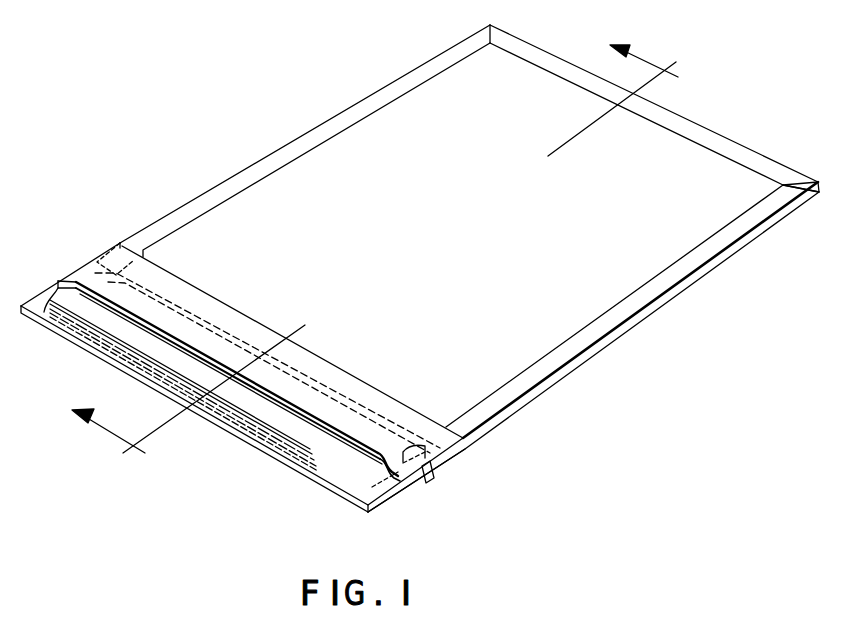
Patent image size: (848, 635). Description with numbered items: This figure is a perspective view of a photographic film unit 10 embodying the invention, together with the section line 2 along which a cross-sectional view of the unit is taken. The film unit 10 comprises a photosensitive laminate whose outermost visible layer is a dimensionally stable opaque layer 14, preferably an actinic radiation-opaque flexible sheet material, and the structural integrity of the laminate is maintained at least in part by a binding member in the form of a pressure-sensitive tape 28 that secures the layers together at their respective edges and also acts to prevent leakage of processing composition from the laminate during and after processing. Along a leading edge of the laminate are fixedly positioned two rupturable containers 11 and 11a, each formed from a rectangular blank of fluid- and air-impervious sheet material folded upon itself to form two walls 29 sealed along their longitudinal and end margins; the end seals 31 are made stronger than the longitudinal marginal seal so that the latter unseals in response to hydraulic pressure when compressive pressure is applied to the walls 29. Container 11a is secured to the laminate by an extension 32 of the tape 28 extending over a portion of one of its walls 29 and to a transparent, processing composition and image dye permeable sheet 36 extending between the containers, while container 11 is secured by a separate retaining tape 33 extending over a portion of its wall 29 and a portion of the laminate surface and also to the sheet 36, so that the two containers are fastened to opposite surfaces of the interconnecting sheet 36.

The film unit 10 is at (195, 192).
The dimensionally stable opaque layer 14 is at (452, 96).
The pressure-sensitive tape 28 is at (342, 120).
The walls 29 is at (160, 345).
The end seals 31 is at (50, 300).
The retaining tape 33 is at (397, 412).
The rupturable container 11 is at (305, 430).
The rupturable container 11a is at (395, 490).
The extension of tape 32 is at (434, 478).
The transparent sheet 36 is at (376, 513).
The section line 2— 2 is at (367, 241).